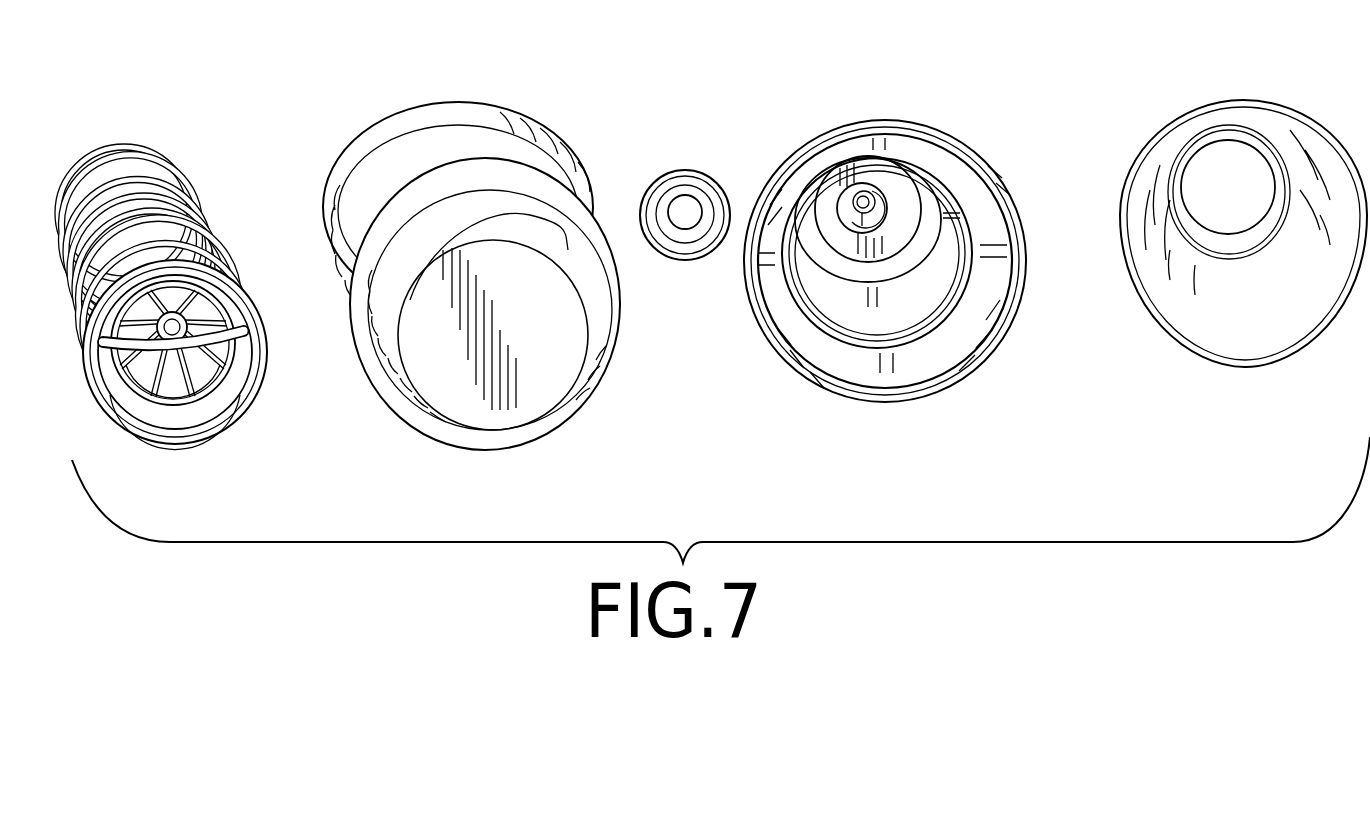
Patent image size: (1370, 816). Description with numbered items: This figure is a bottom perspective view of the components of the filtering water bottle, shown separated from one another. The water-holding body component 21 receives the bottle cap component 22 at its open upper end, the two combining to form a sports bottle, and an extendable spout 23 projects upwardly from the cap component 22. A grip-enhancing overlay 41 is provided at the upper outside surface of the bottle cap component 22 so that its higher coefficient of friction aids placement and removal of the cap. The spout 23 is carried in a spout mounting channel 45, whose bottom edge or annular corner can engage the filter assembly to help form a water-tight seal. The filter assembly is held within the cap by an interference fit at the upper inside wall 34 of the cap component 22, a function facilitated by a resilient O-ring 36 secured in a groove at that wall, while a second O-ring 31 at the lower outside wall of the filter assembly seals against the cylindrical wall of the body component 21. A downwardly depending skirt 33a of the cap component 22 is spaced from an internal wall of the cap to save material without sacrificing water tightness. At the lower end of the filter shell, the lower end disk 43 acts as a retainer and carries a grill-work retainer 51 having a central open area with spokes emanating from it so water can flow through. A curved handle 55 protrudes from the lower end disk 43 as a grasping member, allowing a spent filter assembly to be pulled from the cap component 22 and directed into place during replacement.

The body component 21 is at (545, 128).
The bottle cap component 22 is at (903, 122).
The extendable spout 23 is at (683, 167).
The O-ring 31 is at (207, 428).
The downwardly depending skirt 33a is at (955, 315).
The upper inside wall 34 is at (147, 170).
The O-ring 36 is at (127, 153).
The grip-enhancing overlay 41 is at (1207, 105).
The lower end disk 43 is at (193, 373).
The spout mounting channel 45 is at (890, 190).
The grill-work retainer 51 is at (205, 300).
The curved handle 55 is at (230, 334).